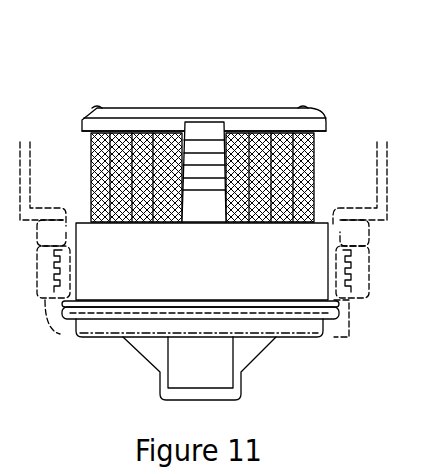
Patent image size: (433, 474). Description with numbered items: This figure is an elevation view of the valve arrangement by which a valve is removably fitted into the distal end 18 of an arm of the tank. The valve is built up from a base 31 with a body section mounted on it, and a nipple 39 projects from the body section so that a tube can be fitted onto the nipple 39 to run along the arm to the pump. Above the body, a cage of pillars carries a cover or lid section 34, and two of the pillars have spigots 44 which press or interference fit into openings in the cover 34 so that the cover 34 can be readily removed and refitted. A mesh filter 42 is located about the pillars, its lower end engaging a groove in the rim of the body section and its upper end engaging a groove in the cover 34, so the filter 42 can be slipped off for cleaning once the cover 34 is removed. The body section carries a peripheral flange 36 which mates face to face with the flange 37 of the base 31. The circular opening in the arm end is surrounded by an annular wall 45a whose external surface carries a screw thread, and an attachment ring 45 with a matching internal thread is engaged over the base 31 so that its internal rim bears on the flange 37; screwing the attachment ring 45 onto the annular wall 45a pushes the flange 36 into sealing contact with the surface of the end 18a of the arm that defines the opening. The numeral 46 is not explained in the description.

The distal end 18 is at (388, 142).
The end surface 18a is at (368, 234).
The base 31 is at (248, 352).
The cover or lid section 34 is at (239, 110).
The peripheral flange 36 is at (334, 307).
The flange 37 is at (78, 315).
The nipple 39 is at (213, 130).
The mesh filter 42 is at (90, 183).
The spigots 44 is at (97, 107).
The attachment ring 45 is at (346, 308).
The annular wall 45a is at (366, 267).
The base plate 46 is at (75, 340).